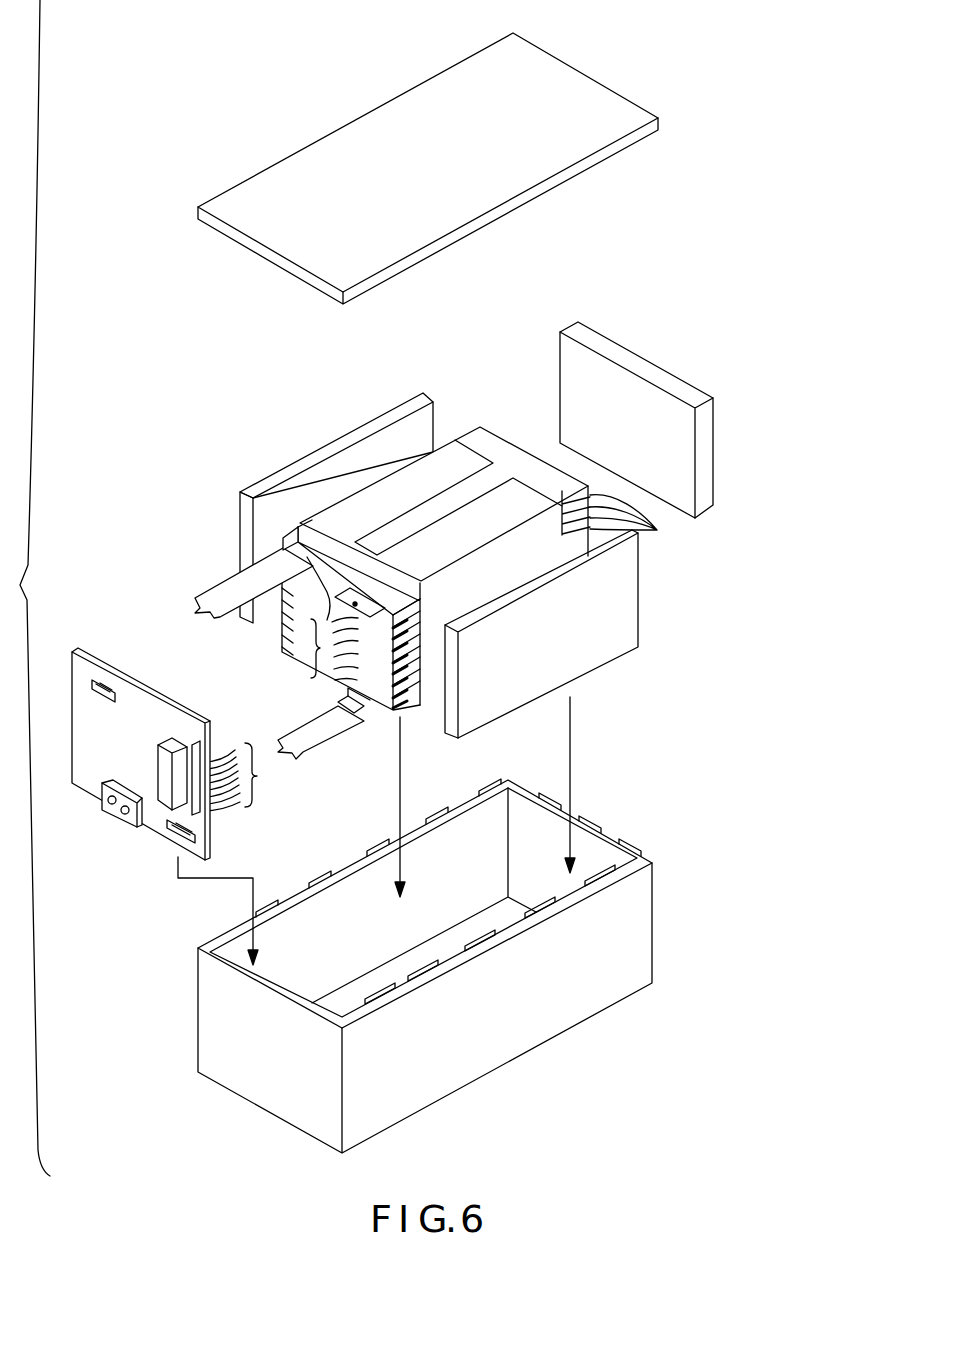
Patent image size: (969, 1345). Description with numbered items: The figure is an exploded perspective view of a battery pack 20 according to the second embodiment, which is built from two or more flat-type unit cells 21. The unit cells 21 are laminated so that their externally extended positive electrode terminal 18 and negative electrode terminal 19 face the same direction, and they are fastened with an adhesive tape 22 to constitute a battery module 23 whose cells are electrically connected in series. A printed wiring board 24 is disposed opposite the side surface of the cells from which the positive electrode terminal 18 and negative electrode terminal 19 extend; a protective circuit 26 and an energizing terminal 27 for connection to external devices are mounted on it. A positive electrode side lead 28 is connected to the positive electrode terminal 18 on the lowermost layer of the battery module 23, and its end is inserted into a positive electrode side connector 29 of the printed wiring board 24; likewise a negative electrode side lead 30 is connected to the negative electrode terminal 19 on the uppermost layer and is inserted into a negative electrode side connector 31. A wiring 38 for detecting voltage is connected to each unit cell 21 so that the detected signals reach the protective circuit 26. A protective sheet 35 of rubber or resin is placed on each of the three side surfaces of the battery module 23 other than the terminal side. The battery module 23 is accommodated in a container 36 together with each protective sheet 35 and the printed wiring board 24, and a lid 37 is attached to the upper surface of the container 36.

The battery pack 20 is at (215, 60).
The lid 37 is at (602, 107).
The protective sheet 35 is at (303, 467).
The battery module 23 is at (382, 480).
The adhesive tape 22 is at (505, 502).
The unit cell 21 is at (637, 519).
The negative electrode side lead 30 is at (210, 593).
The negative electrode terminal 19 is at (283, 548).
The positive electrode terminal 18 is at (358, 605).
The positive electrode side lead 28 is at (323, 737).
The wiring for detecting voltage 38 is at (315, 648).
The printed wiring board 24 is at (102, 652).
The negative electrode side connector 31 is at (110, 690).
The protective circuit 26 is at (172, 740).
The energizing terminal 27 is at (125, 815).
The positive electrode side connector 29 is at (196, 838).
The container 36 is at (642, 930).